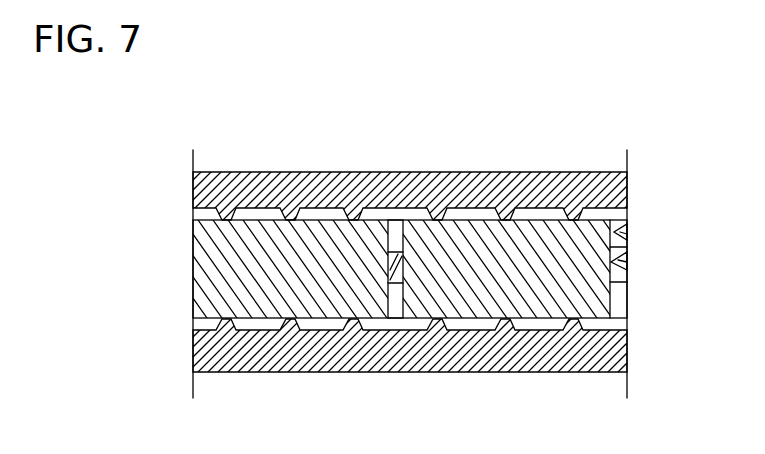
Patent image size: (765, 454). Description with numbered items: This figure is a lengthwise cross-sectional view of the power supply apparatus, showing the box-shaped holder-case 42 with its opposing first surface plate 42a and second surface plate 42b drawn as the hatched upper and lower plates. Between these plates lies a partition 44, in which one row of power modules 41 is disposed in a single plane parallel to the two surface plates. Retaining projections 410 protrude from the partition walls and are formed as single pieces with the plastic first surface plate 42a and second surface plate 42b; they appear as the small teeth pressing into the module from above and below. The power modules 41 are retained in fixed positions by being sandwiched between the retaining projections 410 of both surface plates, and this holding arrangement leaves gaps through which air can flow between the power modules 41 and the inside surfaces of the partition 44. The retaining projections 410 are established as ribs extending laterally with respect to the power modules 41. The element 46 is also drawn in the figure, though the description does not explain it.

The holder-case 42 is at (193, 198).
The first surface plate 42a is at (478, 190).
The second surface plate 42b is at (380, 355).
The retaining projections 410 is at (336, 228).
The elastic body portion 46 is at (278, 292).
The partition 44 is at (401, 221).
The power modules 41 is at (620, 230).